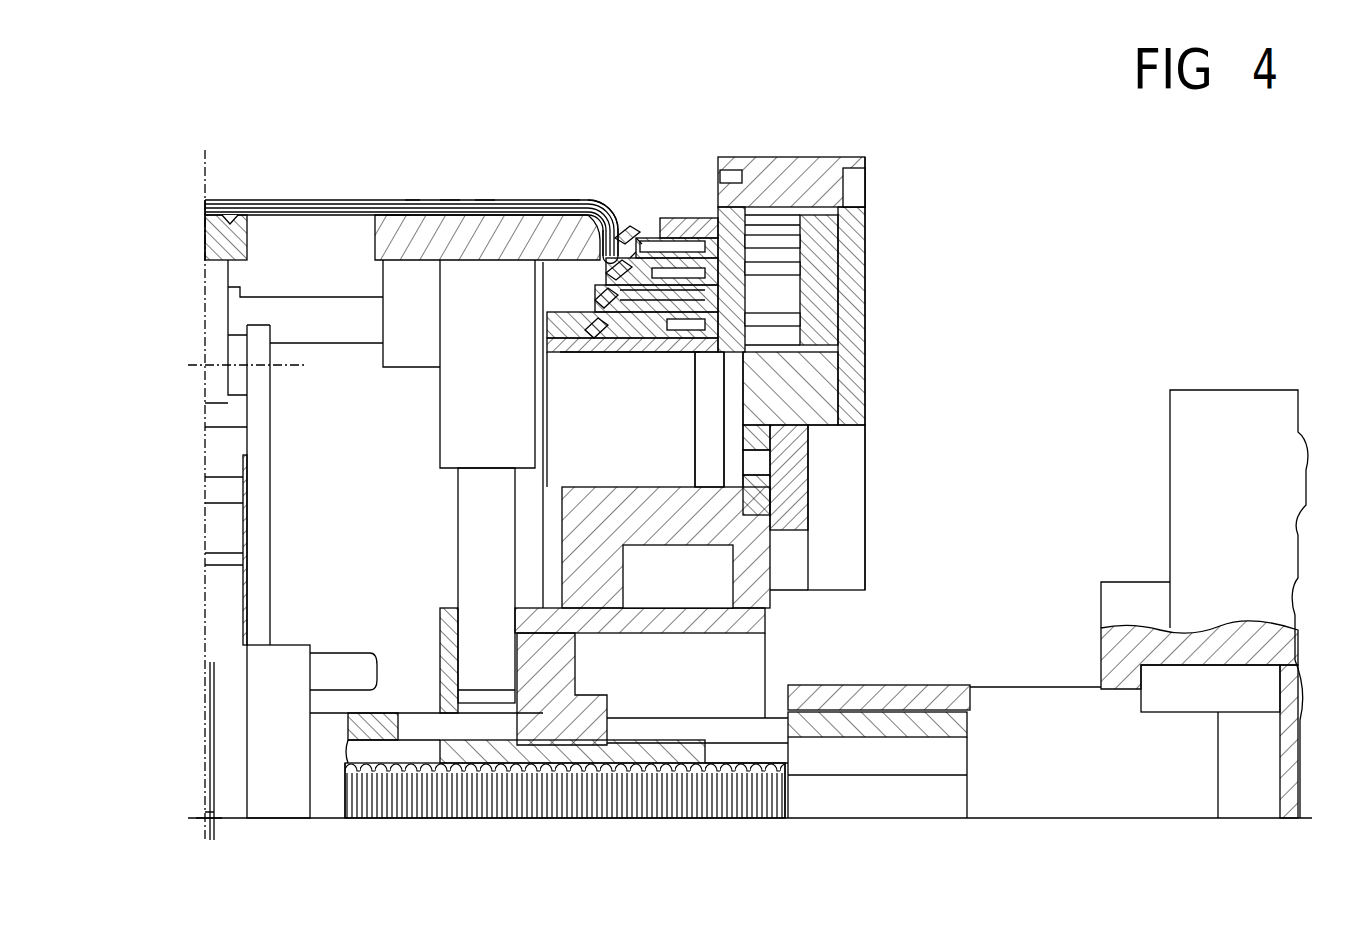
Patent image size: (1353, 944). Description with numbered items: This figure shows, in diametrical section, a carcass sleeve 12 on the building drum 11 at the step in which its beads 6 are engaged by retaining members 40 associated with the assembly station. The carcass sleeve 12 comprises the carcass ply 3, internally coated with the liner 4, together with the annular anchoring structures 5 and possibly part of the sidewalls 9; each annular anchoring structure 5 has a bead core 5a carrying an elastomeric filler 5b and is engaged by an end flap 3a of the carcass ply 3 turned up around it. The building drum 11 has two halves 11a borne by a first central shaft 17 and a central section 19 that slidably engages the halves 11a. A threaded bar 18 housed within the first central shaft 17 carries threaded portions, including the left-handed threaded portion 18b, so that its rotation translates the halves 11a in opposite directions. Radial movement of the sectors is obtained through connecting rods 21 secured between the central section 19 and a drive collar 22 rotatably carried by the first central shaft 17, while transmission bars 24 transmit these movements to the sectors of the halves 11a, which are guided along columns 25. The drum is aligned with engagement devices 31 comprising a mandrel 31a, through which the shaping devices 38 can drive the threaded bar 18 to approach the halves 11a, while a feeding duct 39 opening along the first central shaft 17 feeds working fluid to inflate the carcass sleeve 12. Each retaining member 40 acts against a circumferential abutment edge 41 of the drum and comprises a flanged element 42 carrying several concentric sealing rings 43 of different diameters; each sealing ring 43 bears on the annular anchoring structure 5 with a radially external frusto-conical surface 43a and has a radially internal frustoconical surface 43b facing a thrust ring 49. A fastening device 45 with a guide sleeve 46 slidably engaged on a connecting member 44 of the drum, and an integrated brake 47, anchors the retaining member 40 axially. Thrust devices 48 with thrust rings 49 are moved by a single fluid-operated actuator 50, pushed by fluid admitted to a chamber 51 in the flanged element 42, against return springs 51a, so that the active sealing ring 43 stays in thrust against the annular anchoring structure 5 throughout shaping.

The carcass ply 3 is at (340, 202).
The end flap 3a is at (486, 200).
The liner 4 is at (277, 202).
The annular anchoring structure 5 is at (621, 228).
The bead core 5a is at (622, 228).
The elastomeric filler 5b is at (592, 200).
The bead 6 is at (570, 195).
The sidewall 9 is at (450, 198).
The building drum 11 is at (199, 213).
The half of the building drum 11a is at (413, 202).
The carcass sleeve 12 is at (398, 200).
The first central shaft 17 is at (940, 684).
The threaded bar 18 is at (836, 800).
The left-handed threaded portion 18b is at (498, 820).
The central section 19 is at (232, 205).
The connecting rod 21 is at (258, 458).
The drive collar 22 is at (232, 627).
The transmission bar 24 is at (337, 320).
The column 25 is at (475, 552).
The engagement devices 31 is at (1240, 380).
The mandrel 31a is at (1122, 600).
The shaping devices 38 is at (878, 177).
The feeding duct 39 is at (212, 757).
The retaining member 40 is at (835, 160).
The circumferential abutment edge 41 is at (630, 240).
The flanged element 42 is at (868, 395).
The sealing ring 43 is at (560, 318).
The radially external frusto-conical surface 43a is at (470, 200).
The radially internal frustoconical surface 43b is at (577, 352).
The connecting member 44 is at (712, 623).
The fastening device 45 is at (775, 542).
The guide sleeve 46 is at (753, 587).
The brake 47 is at (683, 586).
The thrust devices 48 is at (788, 200).
The thrust ring 49 is at (698, 218).
The fluid-operated actuator 50 is at (865, 280).
The chamber 51 is at (865, 315).
The return spring 51a is at (865, 240).